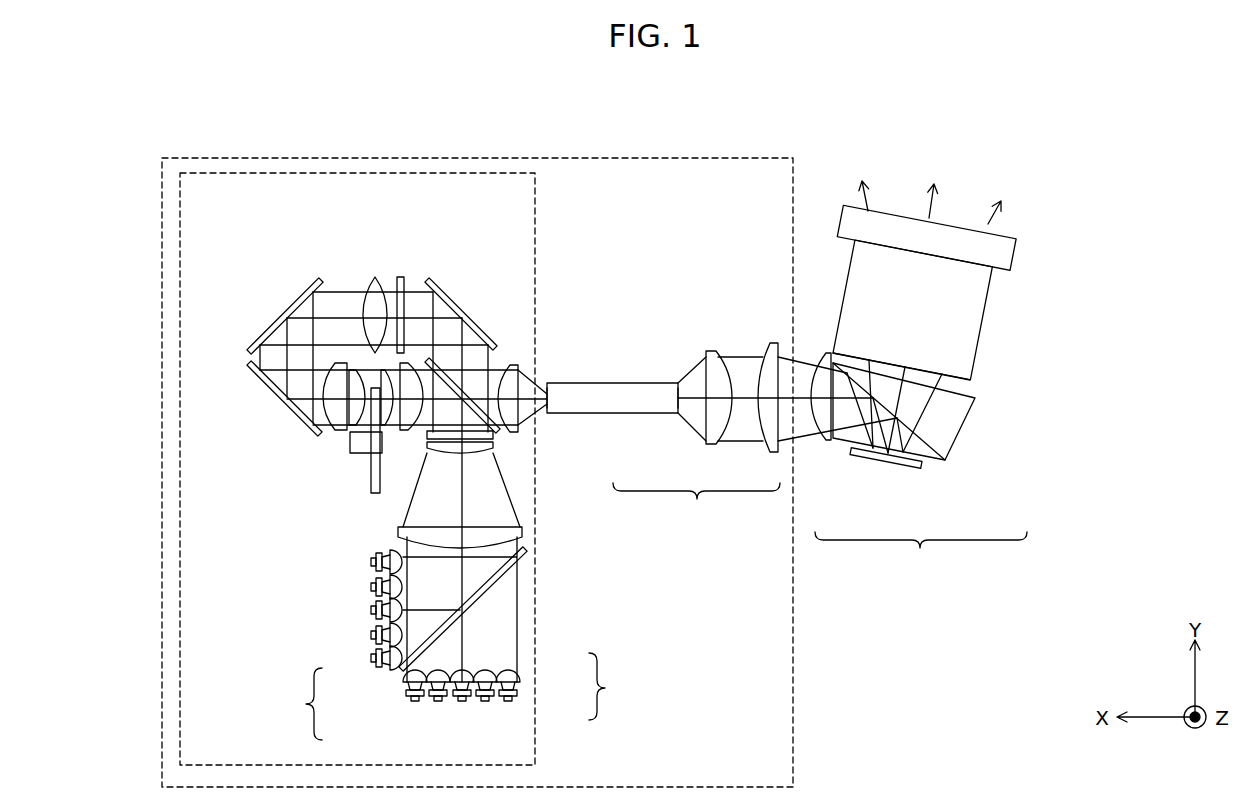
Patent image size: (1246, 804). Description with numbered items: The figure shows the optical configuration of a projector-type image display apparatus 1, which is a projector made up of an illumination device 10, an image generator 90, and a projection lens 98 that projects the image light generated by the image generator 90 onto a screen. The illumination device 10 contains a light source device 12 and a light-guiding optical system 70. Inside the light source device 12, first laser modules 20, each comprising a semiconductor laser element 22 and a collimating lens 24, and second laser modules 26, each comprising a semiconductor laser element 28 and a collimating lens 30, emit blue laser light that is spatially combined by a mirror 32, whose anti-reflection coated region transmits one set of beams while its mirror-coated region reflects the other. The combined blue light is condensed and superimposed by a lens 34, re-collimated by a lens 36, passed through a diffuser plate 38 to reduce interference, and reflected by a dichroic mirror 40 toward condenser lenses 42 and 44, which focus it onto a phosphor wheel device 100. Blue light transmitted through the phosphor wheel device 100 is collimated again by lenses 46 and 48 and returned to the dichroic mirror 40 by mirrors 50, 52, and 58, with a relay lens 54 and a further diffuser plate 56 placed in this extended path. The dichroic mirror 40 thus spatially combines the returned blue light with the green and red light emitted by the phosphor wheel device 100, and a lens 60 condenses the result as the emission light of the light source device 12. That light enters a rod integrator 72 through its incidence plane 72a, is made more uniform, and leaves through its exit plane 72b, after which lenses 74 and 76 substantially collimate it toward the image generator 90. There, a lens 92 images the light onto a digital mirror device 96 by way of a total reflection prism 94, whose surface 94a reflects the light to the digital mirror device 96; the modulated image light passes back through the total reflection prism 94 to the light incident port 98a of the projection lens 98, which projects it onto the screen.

The projector-type image display apparatus 1 is at (977, 119).
The illumination device 10 is at (744, 157).
The light source device 12 is at (467, 170).
The first laser modules 20 is at (517, 686).
The semiconductor laser element 22 is at (515, 698).
The collimating lens 24 is at (518, 679).
The second laser modules 26 is at (337, 647).
The semiconductor laser element 28 is at (380, 663).
The collimating lens 30 is at (393, 672).
The mirror 32 is at (527, 549).
The lens 34 is at (398, 532).
The lens 36 is at (495, 450).
The diffuser plate 38 is at (494, 437).
The dichroic mirror 40 is at (503, 427).
The condenser lens 42 is at (403, 430).
The condenser lens 44 is at (387, 425).
The lens 46 is at (357, 425).
The lens 48 is at (335, 432).
The mirror 50 is at (262, 383).
The mirror 52 is at (289, 309).
The lens 54 is at (373, 277).
The diffuser plate 56 is at (402, 277).
The mirror 58 is at (452, 300).
The lens 60 is at (515, 365).
The light-guiding optical system 70 is at (663, 405).
The rod integrator 72 is at (612, 383).
The incidence plane 72a is at (550, 396).
The exit plane 72b is at (676, 383).
The lens 74 is at (711, 443).
The lens 76 is at (771, 450).
The image generator 90 is at (927, 395).
The lens 92 is at (825, 442).
The total reflection prism 94 is at (929, 424).
The surface 94a is at (942, 452).
The digital mirror device 96 is at (888, 468).
The projection lens 98 is at (932, 306).
The light incident port 98a is at (961, 378).
The phosphor wheel device 100 is at (370, 488).